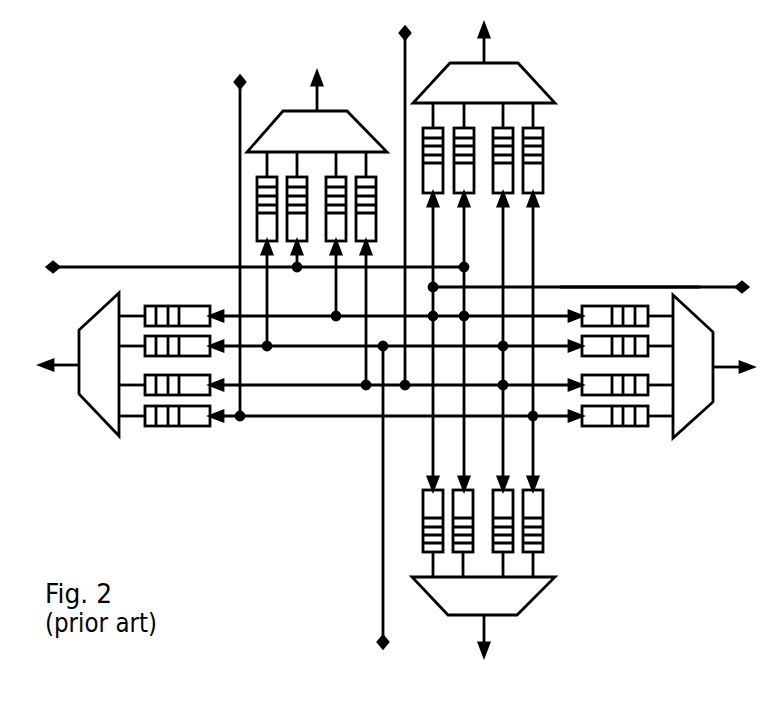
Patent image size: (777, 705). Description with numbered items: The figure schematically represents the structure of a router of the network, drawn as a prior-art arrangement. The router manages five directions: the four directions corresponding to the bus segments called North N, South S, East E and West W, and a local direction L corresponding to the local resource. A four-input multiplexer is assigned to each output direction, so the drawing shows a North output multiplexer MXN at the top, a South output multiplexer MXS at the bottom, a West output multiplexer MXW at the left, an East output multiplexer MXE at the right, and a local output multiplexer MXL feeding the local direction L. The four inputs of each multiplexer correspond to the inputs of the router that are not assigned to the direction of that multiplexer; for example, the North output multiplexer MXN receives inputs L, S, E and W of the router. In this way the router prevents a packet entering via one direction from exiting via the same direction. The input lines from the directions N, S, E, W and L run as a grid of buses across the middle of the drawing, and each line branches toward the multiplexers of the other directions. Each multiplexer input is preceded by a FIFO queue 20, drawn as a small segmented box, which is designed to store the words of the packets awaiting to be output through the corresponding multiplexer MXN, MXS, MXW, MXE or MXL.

The FIFO queue 20 is at (621, 286).
The local output multiplexer MXL is at (317, 230).
The North output multiplexer MXN is at (484, 257).
The South output multiplexer MXS is at (483, 573).
The West output multiplexer MXW is at (125, 364).
The East output multiplexer MXE is at (667, 366).
The local direction L is at (257, 242).
The North direction N is at (425, 201).
The South direction S is at (408, 506).
The West direction W is at (242, 293).
The East direction E is at (597, 309).